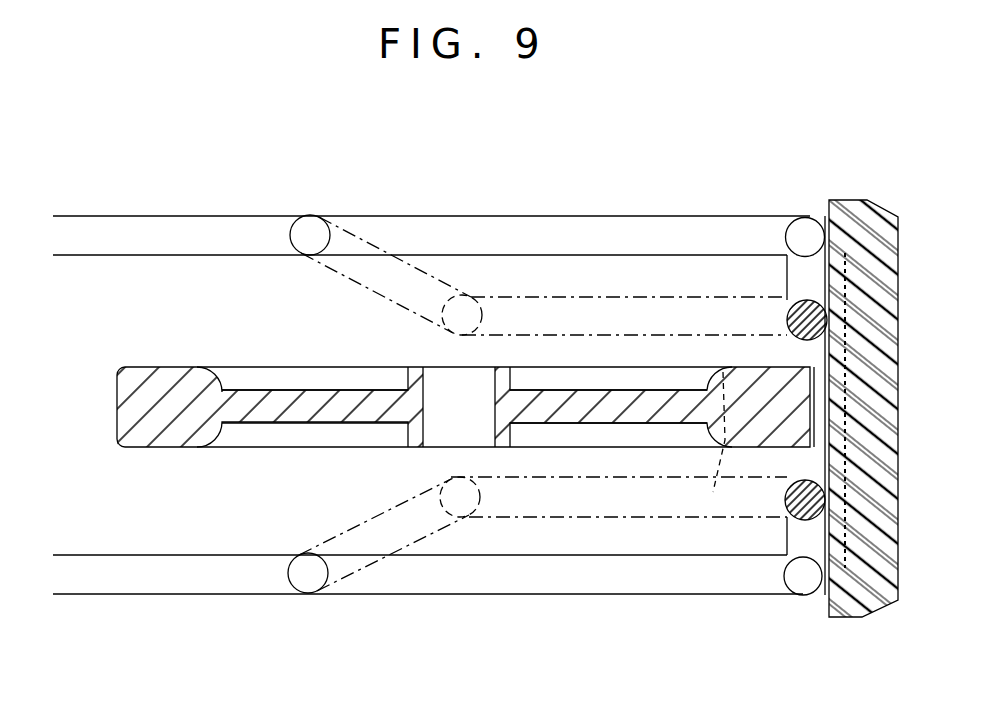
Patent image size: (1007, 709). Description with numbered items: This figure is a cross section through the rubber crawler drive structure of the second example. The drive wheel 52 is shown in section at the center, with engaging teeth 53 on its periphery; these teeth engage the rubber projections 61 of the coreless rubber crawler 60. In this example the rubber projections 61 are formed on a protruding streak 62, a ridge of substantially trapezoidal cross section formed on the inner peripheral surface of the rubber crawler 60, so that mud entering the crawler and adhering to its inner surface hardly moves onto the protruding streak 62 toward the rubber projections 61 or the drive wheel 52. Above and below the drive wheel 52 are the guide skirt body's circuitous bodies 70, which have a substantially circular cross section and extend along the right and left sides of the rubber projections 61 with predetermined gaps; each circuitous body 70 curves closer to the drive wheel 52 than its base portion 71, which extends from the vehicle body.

The drive wheel 52 is at (378, 415).
The engaging teeth 53 is at (712, 392).
The rubber crawler 60 is at (896, 390).
The rubber projections 61 is at (723, 447).
The protruding streak 62 is at (827, 385).
The circuitous bodies 70 is at (666, 320).
The base portion 71 is at (155, 227).